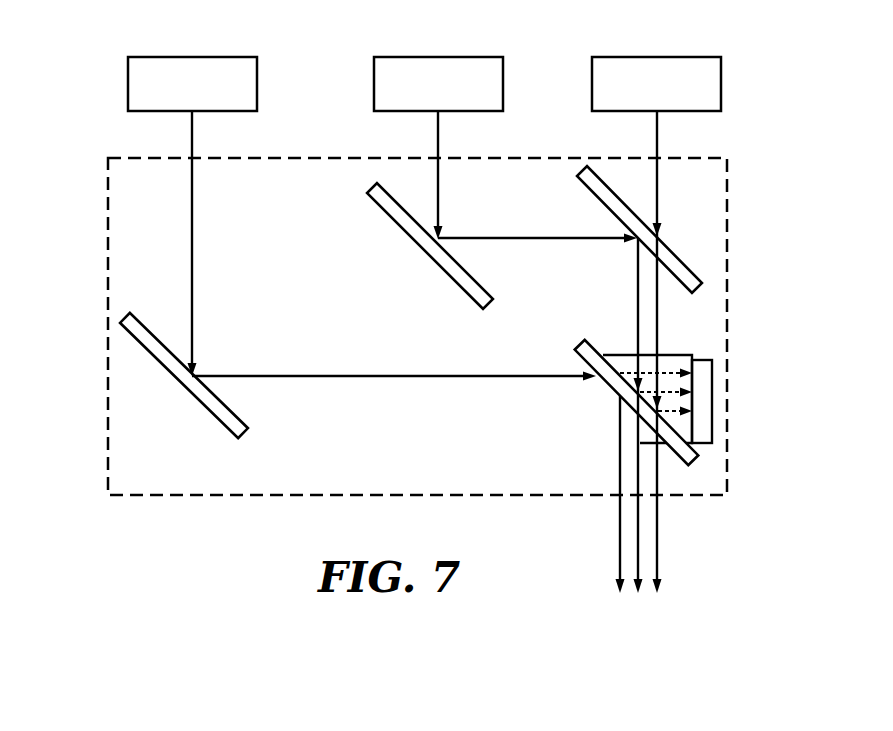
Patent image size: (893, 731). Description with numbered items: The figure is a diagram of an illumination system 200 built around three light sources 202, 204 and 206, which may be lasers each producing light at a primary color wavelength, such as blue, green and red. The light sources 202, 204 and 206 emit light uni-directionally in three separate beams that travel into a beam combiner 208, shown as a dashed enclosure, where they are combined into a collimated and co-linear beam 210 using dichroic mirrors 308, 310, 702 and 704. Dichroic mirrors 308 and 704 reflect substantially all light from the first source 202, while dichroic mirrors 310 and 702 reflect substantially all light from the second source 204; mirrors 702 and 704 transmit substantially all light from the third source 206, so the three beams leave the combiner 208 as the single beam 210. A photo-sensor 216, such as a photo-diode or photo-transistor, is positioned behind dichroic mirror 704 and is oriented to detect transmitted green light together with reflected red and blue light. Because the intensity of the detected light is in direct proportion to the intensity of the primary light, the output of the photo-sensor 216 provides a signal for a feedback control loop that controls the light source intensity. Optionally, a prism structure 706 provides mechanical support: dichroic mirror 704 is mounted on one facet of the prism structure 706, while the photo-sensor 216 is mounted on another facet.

The system 200 is at (216, 558).
The light source 202 is at (200, 56).
The light source 204 is at (418, 56).
The light source 206 is at (636, 56).
The beam combiner 208 is at (108, 232).
The collimated and co-linear beam 210 is at (620, 522).
The photo-sensor 216 is at (713, 372).
The dichroic mirror 308 is at (216, 419).
The dichroic mirror 310 is at (396, 222).
The dichroic mirror 702 is at (598, 200).
The dichroic mirror 704 is at (578, 348).
The prism structure 706 is at (618, 353).